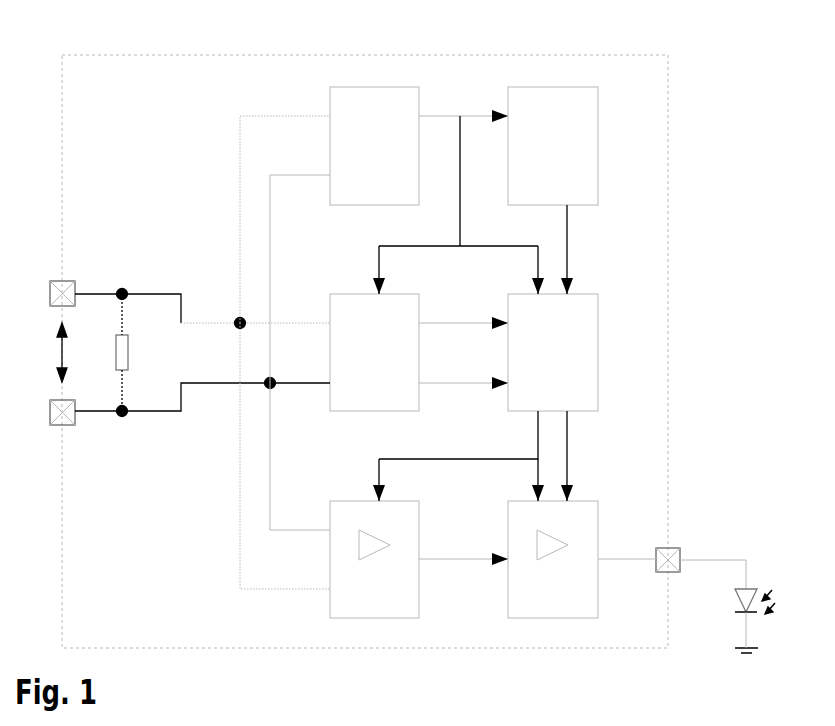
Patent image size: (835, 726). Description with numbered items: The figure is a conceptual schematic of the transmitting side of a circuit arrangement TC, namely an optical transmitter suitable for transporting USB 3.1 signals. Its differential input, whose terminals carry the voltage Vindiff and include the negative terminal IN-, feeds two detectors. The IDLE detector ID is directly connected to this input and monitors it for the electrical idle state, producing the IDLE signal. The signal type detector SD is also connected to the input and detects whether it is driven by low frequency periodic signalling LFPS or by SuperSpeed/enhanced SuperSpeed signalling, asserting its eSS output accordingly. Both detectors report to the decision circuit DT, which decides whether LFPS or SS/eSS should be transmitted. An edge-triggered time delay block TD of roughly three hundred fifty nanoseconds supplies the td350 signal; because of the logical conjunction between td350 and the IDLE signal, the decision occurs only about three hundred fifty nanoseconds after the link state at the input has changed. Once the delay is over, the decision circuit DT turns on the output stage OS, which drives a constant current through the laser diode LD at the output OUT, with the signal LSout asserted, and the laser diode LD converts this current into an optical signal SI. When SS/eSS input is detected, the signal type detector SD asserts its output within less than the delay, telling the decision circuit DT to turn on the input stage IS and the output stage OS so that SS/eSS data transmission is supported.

The circuit arrangement TC is at (668, 92).
The IDLE detector ID is at (374, 146).
The time delay block TD is at (553, 146).
The signal type detector SD is at (374, 352).
The decision circuit DT is at (553, 352).
The input stage IS is at (374, 559).
The output stage OS is at (553, 559).
The second terminal of differential input IN- is at (190, 411).
The voltage at differential input Vindiff is at (41, 352).
The IDLE signal IDLE is at (458, 195).
The td350 signal td350 is at (588, 249).
The low frequency periodic signalling LFPS is at (463, 313).
The SS/eSS output eSS is at (463, 374).
The LSout signal LSout is at (590, 456).
The output OUT is at (672, 558).
The light-emitting component LD is at (734, 621).
The optical signal SI is at (774, 607).